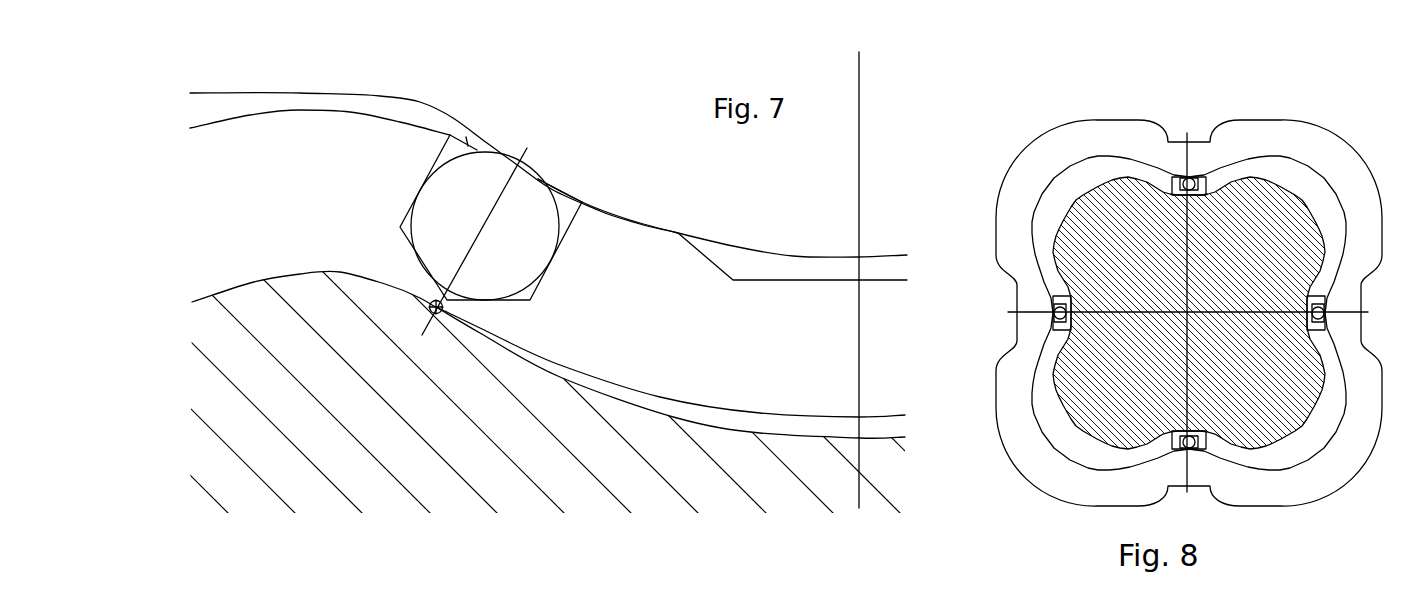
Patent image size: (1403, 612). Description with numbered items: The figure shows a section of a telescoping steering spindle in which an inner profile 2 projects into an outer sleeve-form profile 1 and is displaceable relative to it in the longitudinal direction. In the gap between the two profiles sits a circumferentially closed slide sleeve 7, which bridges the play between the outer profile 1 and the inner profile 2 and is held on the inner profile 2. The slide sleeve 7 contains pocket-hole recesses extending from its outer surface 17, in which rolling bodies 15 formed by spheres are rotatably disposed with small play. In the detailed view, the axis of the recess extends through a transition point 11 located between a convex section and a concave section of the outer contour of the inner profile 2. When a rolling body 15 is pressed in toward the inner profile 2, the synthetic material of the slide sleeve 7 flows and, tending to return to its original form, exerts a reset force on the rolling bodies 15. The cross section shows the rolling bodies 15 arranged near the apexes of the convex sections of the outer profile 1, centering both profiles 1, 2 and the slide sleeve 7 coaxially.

In FIG. 7, the outer sleeve-form profile 1 is at (447, 113).
In FIG. 8, the outer sleeve-form profile 1 is at (1125, 135).
In FIG. 7, the inner profile 2 is at (363, 475).
In FIG. 8, the inner profile 2 is at (1110, 213).
In FIG. 7, the slide sleeve 7 is at (617, 235).
In FIG. 8, the slide sleeve 7 is at (1157, 172).
In FIG. 7, the transition point 11 is at (437, 313).
In FIG. 7, the rolling bodies 15 is at (525, 187).
In FIG. 8, the rolling bodies 15 is at (1193, 180).
In FIG. 7, the outer surface 17 is at (468, 146).